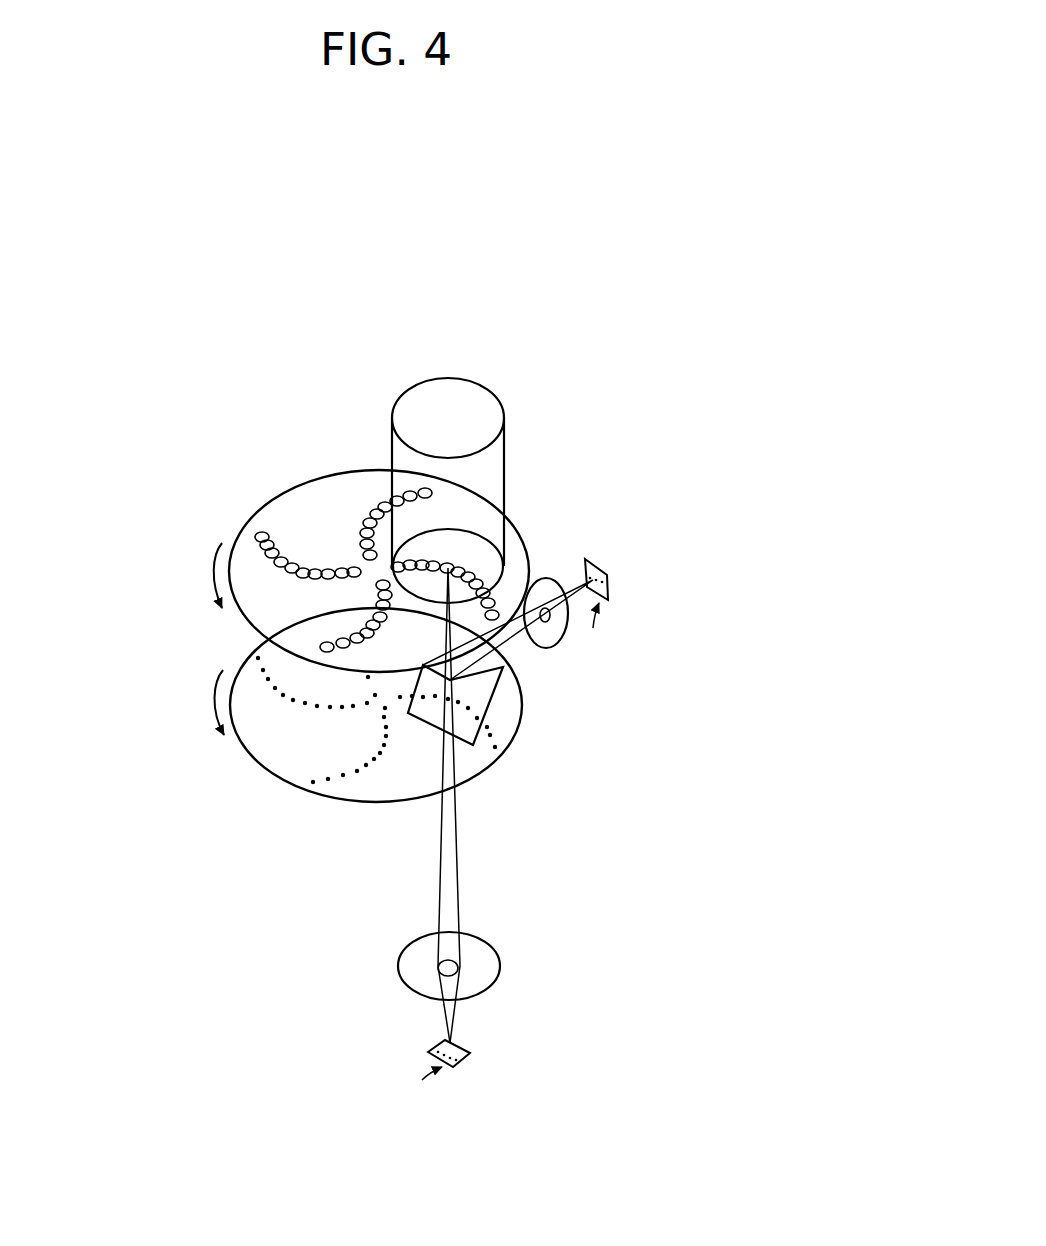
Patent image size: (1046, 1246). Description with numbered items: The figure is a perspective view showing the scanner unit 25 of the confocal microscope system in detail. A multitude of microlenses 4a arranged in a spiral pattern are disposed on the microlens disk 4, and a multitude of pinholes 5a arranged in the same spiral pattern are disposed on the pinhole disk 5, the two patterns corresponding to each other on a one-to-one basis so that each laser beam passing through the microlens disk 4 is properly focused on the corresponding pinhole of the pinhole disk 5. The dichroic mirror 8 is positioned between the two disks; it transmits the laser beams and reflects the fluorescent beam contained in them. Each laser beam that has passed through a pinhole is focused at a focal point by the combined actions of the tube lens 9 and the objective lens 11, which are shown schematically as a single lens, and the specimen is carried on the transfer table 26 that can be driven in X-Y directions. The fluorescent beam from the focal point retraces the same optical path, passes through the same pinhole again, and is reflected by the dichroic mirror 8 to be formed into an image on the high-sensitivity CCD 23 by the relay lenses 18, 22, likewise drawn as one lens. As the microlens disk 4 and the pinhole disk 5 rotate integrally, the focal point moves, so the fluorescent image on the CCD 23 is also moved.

The scanner unit 25 is at (472, 330).
The microlens disk 4 is at (293, 488).
The microlenses 4a is at (273, 535).
The pinhole disk 5 is at (254, 756).
The pinholes 5a is at (357, 771).
The dichroic mirror 8 is at (500, 702).
The relay lens 18 is at (686, 630).
The relay lens 22 is at (562, 640).
The CCD 23 is at (610, 575).
The tube lens 9 is at (549, 943).
The objective lens 11 is at (449, 966).
The transfer table 26 is at (471, 1050).